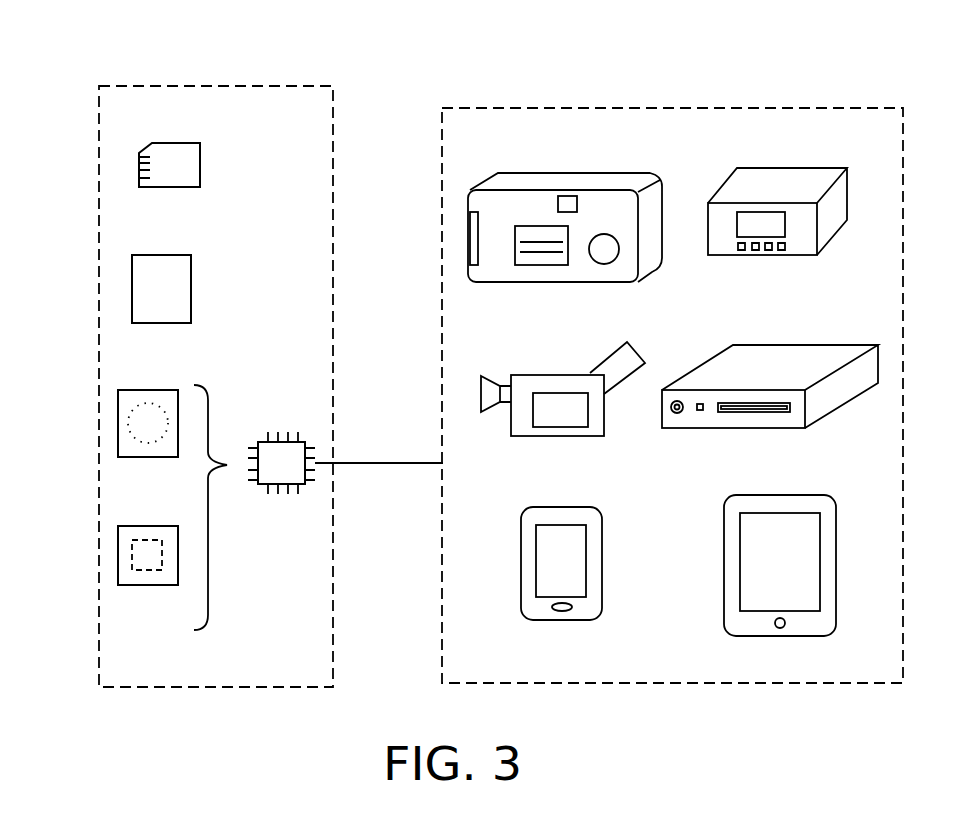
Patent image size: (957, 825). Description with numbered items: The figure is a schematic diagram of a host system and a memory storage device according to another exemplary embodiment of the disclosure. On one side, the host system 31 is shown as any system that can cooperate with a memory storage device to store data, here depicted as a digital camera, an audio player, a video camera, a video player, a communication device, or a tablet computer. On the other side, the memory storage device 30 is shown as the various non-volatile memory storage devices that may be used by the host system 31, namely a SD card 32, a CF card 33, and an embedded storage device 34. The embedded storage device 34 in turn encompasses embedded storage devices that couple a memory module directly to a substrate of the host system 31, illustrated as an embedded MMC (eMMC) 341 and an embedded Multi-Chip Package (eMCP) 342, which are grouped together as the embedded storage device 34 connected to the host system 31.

The memory storage device 30 is at (204, 86).
The host system 31 is at (598, 108).
The SD card 32 is at (139, 170).
The CF card 33 is at (132, 290).
The embedded storage device 34 is at (231, 497).
The embedded MMC (eMMC) 341 is at (118, 426).
The embedded Multi-Chip Package (eMCP) 342 is at (118, 556).